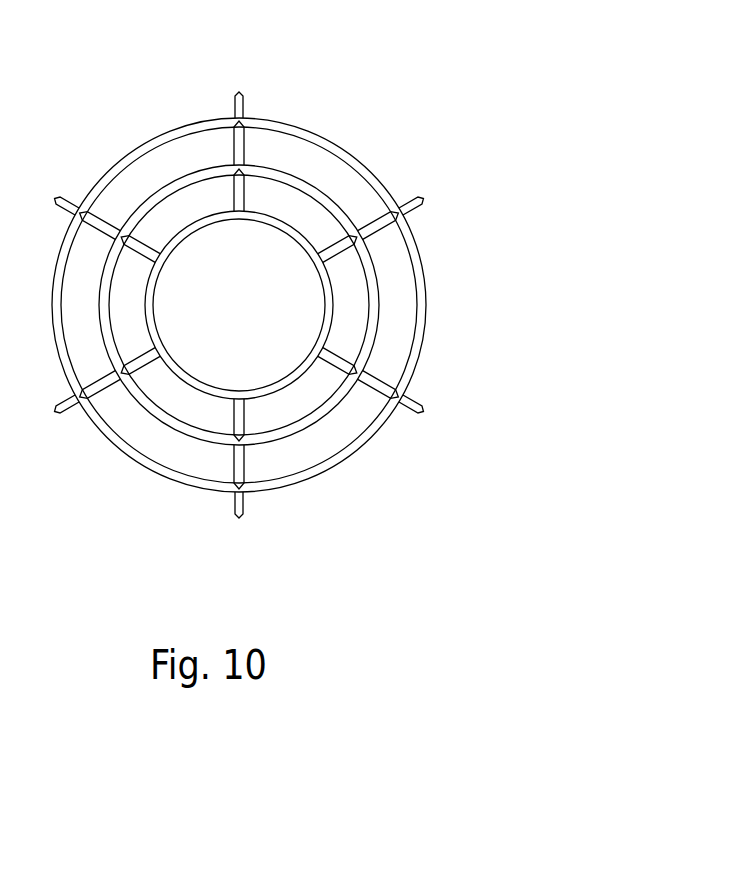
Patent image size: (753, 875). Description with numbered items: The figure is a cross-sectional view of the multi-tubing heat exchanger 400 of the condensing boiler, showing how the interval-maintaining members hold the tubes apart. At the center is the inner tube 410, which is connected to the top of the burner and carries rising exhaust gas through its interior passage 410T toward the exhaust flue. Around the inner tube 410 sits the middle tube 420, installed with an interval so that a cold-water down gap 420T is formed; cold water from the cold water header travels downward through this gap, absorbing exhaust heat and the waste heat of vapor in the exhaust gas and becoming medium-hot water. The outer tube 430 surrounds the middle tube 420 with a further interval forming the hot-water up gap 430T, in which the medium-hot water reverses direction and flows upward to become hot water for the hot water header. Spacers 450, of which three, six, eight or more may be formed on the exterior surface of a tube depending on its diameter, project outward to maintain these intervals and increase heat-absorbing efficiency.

The multi-tubing heat exchanger 400 is at (343, 72).
The inner tube 410 is at (335, 302).
The middle tube 420 is at (313, 190).
The outer tube 430 is at (148, 472).
The spacers 450 is at (233, 98).
The inner tube passage 410T is at (253, 325).
The cold-water down gap 420T is at (345, 335).
The hot-water up gap 430T is at (360, 197).